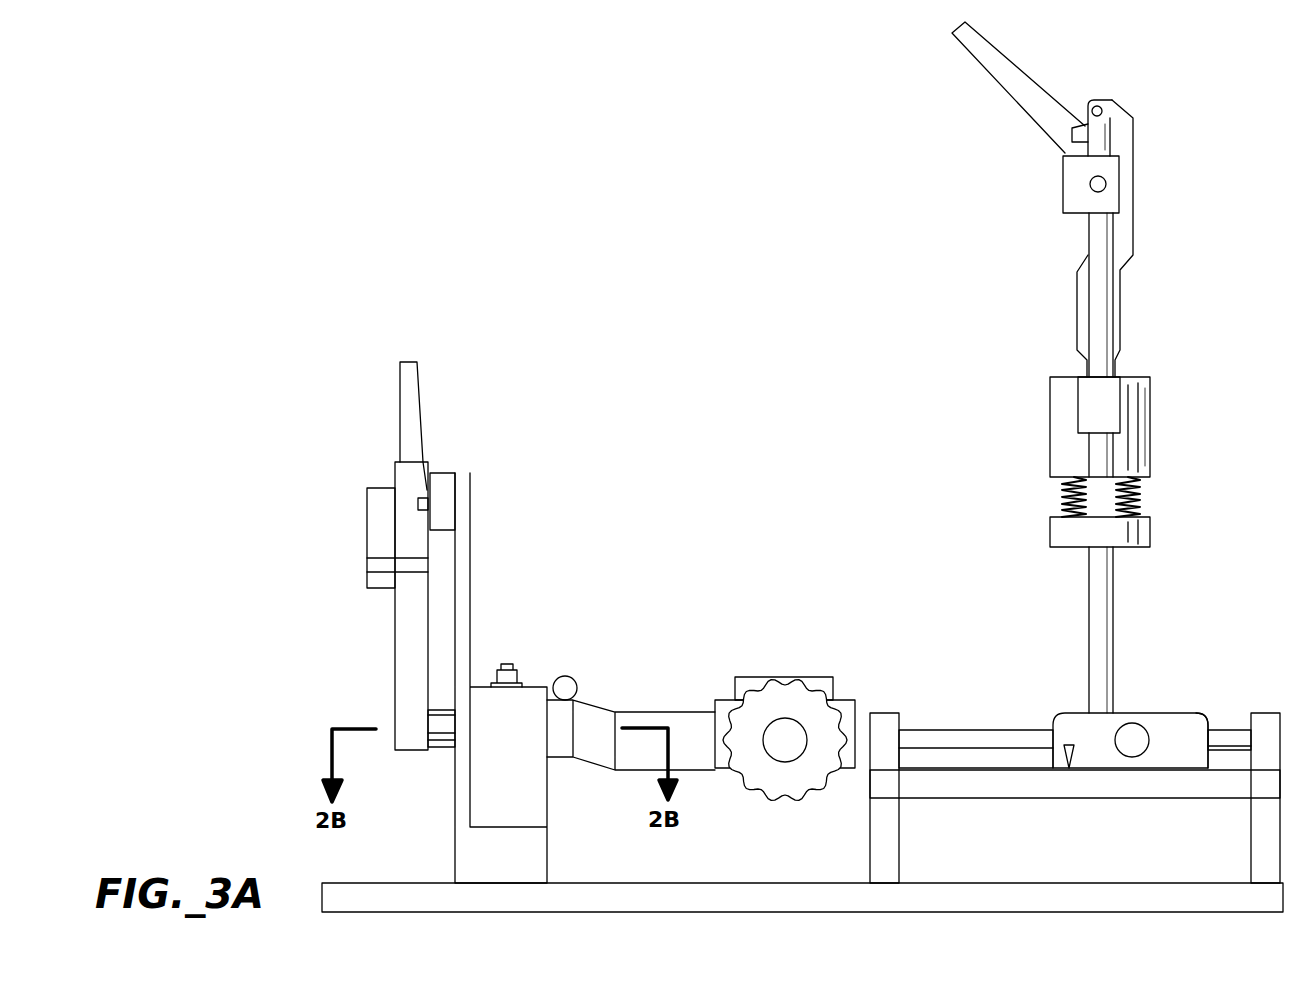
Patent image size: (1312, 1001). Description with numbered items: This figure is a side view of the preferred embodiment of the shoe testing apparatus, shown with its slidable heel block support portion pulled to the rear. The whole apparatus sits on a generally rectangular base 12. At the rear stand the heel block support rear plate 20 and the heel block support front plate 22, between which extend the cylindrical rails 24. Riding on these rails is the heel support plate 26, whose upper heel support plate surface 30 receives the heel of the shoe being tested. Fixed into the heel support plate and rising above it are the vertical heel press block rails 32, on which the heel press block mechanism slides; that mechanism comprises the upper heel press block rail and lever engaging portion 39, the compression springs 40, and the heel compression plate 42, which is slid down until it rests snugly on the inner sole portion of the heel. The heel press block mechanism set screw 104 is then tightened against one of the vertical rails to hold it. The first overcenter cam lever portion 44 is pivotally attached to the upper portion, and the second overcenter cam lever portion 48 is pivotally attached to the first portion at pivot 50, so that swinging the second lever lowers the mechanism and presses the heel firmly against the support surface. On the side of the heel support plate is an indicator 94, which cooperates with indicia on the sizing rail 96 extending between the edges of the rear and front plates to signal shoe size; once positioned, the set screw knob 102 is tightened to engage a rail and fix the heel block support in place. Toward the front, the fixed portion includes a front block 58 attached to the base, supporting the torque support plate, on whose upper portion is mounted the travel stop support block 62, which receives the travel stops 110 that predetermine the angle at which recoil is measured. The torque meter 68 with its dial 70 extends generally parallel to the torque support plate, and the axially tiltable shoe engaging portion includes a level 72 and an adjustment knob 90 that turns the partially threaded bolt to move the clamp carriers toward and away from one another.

The base 12 is at (948, 893).
The heel block support rear plate 20 is at (1258, 840).
The heel block support front plate 22 is at (875, 833).
The rails 24 is at (983, 737).
The heel support plate 26 is at (1188, 727).
The upper heel support plate surface 30 is at (1147, 713).
The vertical heel press block rails 32 is at (1105, 620).
The upper heel press block rail and lever engaging portion 39 is at (1142, 410).
The compression springs 40 is at (1140, 490).
The heel compression plate 42 is at (1140, 532).
The first overcenter cam lever portion 44 is at (1128, 247).
The second overcenter cam lever portion 48 is at (1000, 68).
The pivot 50 is at (1098, 105).
The front block 58 is at (462, 849).
The travel stop support block 62 is at (442, 480).
The torque meter 68 is at (403, 633).
The dial 70 is at (378, 540).
The level 72 is at (577, 683).
The adjustment knob 90 is at (785, 783).
The indicator 94 is at (1069, 743).
The sizing rail 96 is at (1040, 788).
The set screw knob 102 is at (1130, 745).
The heel press block mechanism set screw 104 is at (1108, 184).
The travel stops 110 is at (415, 502).